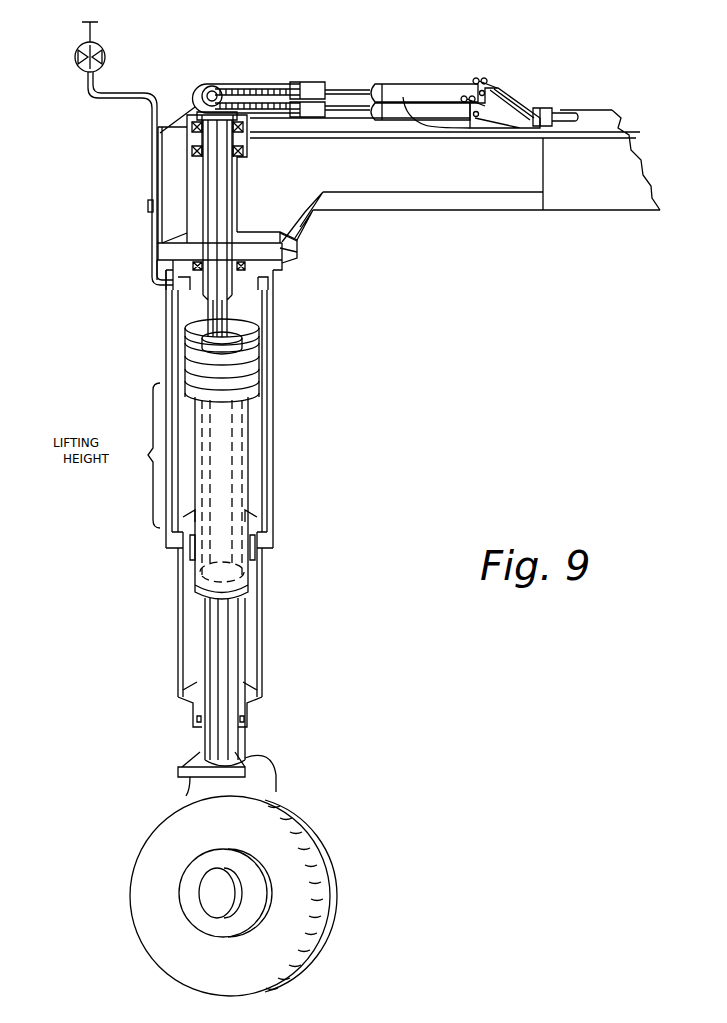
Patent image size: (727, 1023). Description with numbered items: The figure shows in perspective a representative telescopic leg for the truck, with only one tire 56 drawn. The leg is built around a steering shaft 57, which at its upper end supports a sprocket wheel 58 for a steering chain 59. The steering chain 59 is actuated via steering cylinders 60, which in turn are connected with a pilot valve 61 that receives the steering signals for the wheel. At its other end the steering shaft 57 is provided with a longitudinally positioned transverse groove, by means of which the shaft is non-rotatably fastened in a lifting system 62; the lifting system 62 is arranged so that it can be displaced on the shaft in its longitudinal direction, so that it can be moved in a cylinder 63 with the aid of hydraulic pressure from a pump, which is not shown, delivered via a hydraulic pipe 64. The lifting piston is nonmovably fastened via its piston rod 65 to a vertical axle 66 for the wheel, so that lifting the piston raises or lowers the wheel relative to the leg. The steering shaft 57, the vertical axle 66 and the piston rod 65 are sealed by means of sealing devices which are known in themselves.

The tire 56 is at (292, 870).
The steering shaft 57 is at (213, 188).
The sprocket wheel 58 is at (215, 90).
The steering chain 59 is at (264, 84).
The steering cylinders 60 is at (452, 93).
The pilot valve 61 is at (542, 103).
The lifting system 62 is at (258, 357).
The cylinder 63 is at (256, 452).
The hydraulic pipe 64 is at (146, 208).
The piston rod 65 is at (238, 487).
The vertical axle 66 is at (228, 637).